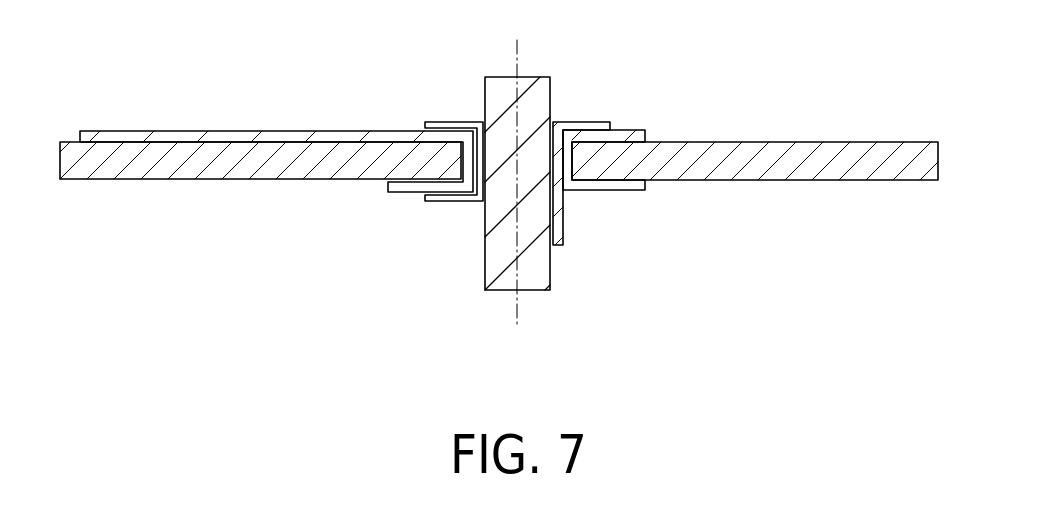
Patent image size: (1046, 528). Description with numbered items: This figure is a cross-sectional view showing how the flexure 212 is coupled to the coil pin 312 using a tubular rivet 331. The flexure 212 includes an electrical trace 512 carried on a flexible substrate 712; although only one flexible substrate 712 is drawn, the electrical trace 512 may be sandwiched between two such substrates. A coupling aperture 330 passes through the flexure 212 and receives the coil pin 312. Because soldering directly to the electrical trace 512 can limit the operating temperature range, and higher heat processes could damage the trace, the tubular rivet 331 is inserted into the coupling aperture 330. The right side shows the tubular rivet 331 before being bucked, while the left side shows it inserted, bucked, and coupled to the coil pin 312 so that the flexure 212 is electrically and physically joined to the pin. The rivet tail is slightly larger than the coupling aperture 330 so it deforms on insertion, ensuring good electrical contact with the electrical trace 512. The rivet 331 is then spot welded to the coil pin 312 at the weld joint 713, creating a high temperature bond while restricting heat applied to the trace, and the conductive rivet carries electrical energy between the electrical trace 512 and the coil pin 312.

The flexure 212 is at (750, 143).
The flexible substrate 712 is at (753, 172).
The weld joint 713 is at (475, 113).
The electrical trace 512 is at (270, 121).
The coil pin 312 is at (542, 260).
The coupling aperture 330 is at (572, 201).
The tubular rivet 331 is at (436, 216).